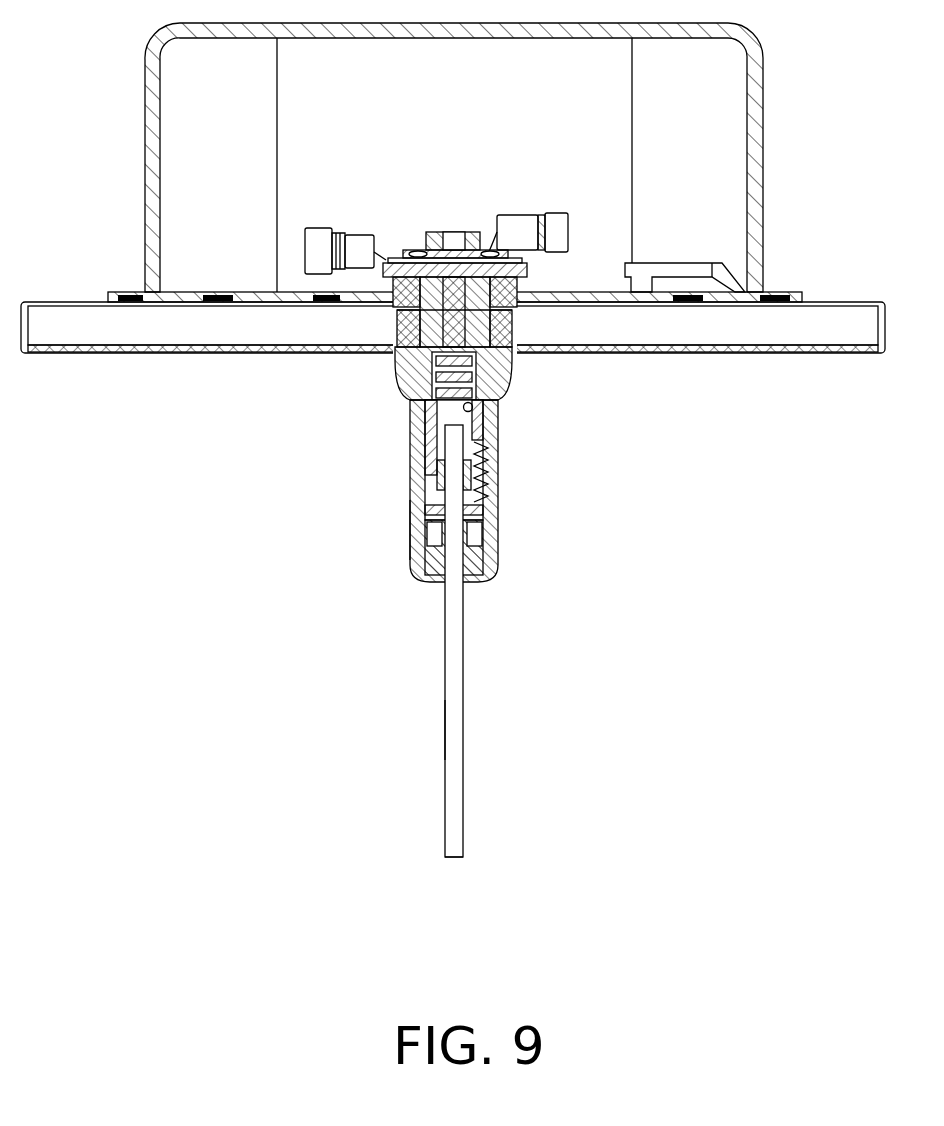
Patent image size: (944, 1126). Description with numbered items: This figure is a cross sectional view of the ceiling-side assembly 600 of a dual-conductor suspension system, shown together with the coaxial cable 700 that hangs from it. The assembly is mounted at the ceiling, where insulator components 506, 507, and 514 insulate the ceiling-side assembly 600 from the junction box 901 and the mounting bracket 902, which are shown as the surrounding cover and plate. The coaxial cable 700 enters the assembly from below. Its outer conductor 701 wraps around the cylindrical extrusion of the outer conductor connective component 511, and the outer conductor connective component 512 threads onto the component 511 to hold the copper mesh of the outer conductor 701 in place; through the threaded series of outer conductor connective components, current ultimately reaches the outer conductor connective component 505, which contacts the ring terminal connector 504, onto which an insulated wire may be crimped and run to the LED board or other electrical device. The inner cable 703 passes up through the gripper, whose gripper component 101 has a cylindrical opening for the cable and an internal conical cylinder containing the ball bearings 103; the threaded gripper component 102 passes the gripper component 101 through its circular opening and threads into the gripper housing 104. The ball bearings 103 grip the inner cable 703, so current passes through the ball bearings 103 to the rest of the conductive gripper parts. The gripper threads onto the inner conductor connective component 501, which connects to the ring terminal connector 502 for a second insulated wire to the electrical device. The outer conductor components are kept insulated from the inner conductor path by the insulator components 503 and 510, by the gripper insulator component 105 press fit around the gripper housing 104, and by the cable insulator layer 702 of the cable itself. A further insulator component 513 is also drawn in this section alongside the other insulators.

The junction box 901 is at (145, 120).
The mounting bracket 902 is at (148, 352).
The inner conductor connective component 501 is at (468, 236).
The ring terminal connector 502 is at (575, 226).
The insulator component 503 is at (420, 252).
The ring terminal connector 504 is at (303, 243).
The outer conductor connective component 505 is at (515, 257).
The insulator component 506 is at (530, 270).
The insulator component 507 is at (390, 309).
The sealing ring 513 is at (522, 330).
The insulator component 514 is at (518, 376).
The gripper housing 104 is at (393, 363).
The gripper insulator component 105 is at (402, 387).
The inner cable 703 is at (498, 385).
The ball bearings 103 is at (497, 417).
The gripper component 102 is at (412, 441).
The gripper component 101 is at (495, 475).
The insulator component 510 is at (493, 493).
The outer conductor connective component 511 is at (490, 513).
The outer conductor connective component 512 is at (500, 577).
The ceiling-side assembly 600 is at (360, 524).
The coaxial cable 700 is at (358, 755).
The outer conductor 701 is at (465, 829).
The cable insulator layer 702 is at (458, 755).